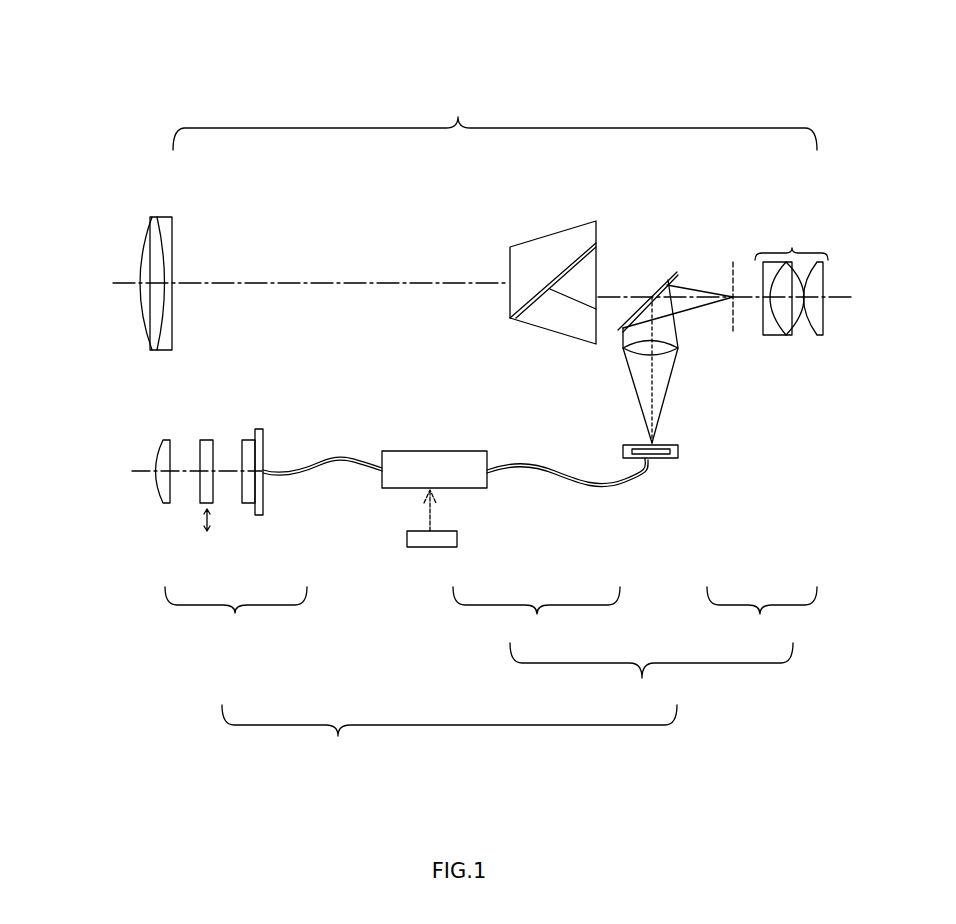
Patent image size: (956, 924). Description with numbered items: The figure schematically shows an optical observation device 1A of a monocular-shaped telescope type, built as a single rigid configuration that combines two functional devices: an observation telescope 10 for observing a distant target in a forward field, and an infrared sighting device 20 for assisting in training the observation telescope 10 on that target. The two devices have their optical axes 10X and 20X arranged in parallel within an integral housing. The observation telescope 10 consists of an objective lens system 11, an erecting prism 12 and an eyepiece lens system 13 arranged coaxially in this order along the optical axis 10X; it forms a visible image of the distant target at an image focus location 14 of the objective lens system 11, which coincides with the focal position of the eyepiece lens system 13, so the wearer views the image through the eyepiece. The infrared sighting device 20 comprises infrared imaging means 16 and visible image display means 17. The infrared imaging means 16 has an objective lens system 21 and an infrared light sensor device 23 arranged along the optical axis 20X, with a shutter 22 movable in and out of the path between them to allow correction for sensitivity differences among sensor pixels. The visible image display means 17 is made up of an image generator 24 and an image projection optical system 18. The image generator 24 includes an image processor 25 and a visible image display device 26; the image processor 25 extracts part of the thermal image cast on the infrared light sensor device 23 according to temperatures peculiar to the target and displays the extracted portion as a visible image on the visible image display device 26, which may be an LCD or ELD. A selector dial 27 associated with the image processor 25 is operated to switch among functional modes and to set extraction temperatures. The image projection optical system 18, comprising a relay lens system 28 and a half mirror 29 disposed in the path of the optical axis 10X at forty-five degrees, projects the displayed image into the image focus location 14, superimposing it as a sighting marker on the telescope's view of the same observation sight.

The optical observation device 1A is at (277, 48).
The observation telescope 10 is at (495, 117).
The optical axis 10X is at (122, 284).
The objective lens system 11 is at (172, 218).
The erecting prism 12 is at (560, 233).
The eyepiece lens system 13 is at (790, 250).
The image focus location 14 is at (733, 262).
The infrared imaging means 16 is at (235, 613).
The visible image display means 17 is at (651, 677).
The image projection optical system 18 is at (762, 620).
The infrared sighting device 20 is at (449, 739).
The optical axis 20X is at (139, 470).
The objective lens system 21 is at (168, 505).
The shutter 22 is at (215, 505).
The infrared light sensor device 23 is at (264, 515).
The image generator 24 is at (536, 619).
The image processor 25 is at (487, 489).
The visible image display device 26 is at (667, 460).
The selector dial 27 is at (457, 539).
The relay lens system 28 is at (680, 350).
The half mirror 29 is at (680, 274).